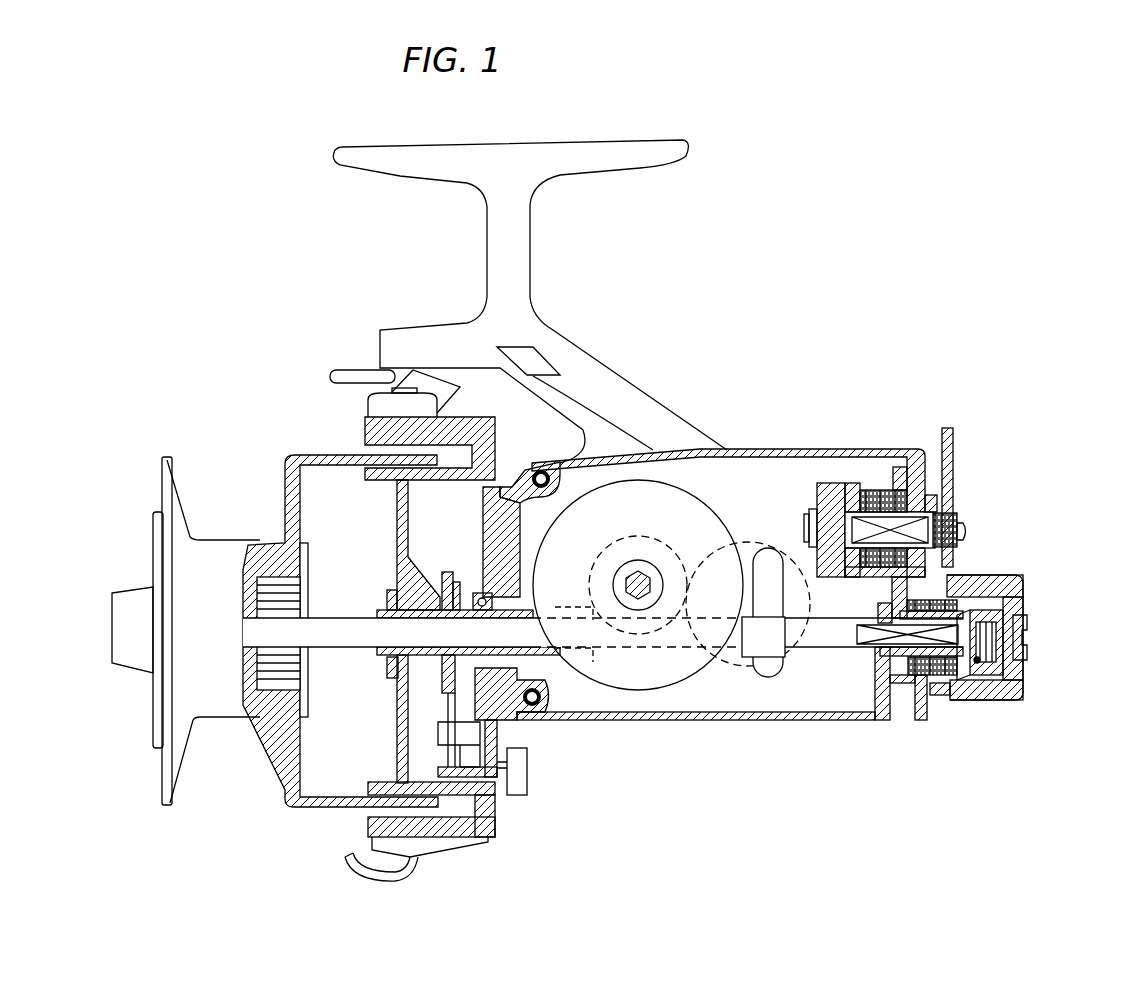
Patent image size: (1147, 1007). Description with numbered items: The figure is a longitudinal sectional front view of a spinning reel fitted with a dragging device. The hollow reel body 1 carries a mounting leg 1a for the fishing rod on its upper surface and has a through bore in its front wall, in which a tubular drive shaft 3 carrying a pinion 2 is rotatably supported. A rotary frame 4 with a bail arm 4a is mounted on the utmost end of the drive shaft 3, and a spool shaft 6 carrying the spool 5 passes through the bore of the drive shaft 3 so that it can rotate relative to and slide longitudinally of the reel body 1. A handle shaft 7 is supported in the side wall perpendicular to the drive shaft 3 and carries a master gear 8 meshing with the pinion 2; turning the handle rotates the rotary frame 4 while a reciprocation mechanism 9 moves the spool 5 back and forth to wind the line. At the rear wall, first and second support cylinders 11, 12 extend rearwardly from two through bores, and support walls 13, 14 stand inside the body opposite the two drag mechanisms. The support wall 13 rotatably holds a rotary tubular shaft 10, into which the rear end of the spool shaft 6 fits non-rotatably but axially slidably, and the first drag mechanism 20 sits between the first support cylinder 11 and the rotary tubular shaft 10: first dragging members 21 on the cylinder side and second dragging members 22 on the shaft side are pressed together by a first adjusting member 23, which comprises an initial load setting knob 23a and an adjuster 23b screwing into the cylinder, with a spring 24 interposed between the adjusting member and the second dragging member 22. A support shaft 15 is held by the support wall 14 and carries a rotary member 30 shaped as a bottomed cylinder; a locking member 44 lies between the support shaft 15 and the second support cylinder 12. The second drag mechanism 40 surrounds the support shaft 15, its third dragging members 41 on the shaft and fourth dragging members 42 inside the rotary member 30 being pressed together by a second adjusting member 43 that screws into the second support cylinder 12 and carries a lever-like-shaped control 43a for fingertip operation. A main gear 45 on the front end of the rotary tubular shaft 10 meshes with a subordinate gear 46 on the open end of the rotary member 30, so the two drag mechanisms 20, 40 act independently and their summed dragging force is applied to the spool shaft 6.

The reel body 1 is at (745, 446).
The mounting leg 1a is at (520, 233).
The pinion 2 is at (548, 705).
The tubular drive shaft 3 is at (397, 677).
The rotary frame 4 is at (450, 787).
The bail arm 4a is at (367, 870).
The spool 5 is at (218, 705).
The spool shaft 6 is at (338, 637).
The handle shaft 7 is at (630, 597).
The master gear 8 is at (638, 683).
The reciprocation mechanism 9 is at (727, 670).
The rotary tubular shaft 10 is at (880, 657).
The first support cylinder 11 is at (983, 700).
The second support cylinder 12 is at (953, 487).
The support wall 13 is at (885, 687).
The support wall 14 is at (817, 483).
The support shaft 15 is at (848, 482).
The first drag mechanism 20 is at (960, 693).
The first dragging members 21 is at (923, 717).
The second dragging members 22 is at (915, 720).
The first adjusting member 23 is at (1098, 657).
The initial load setting knob 23a is at (1020, 687).
The adjuster 23b is at (1027, 663).
The spring 24 is at (990, 573).
The rotary member 30 is at (862, 580).
The second drag mechanism 40 is at (957, 457).
The third dragging members 41 is at (860, 492).
The fourth dragging members 42 is at (875, 492).
The second adjusting member 43 is at (957, 497).
The lever-like-shaped control 43a is at (948, 430).
The locking member 44 is at (963, 513).
The main gear 45 is at (890, 720).
The subordinate gear 46 is at (892, 593).